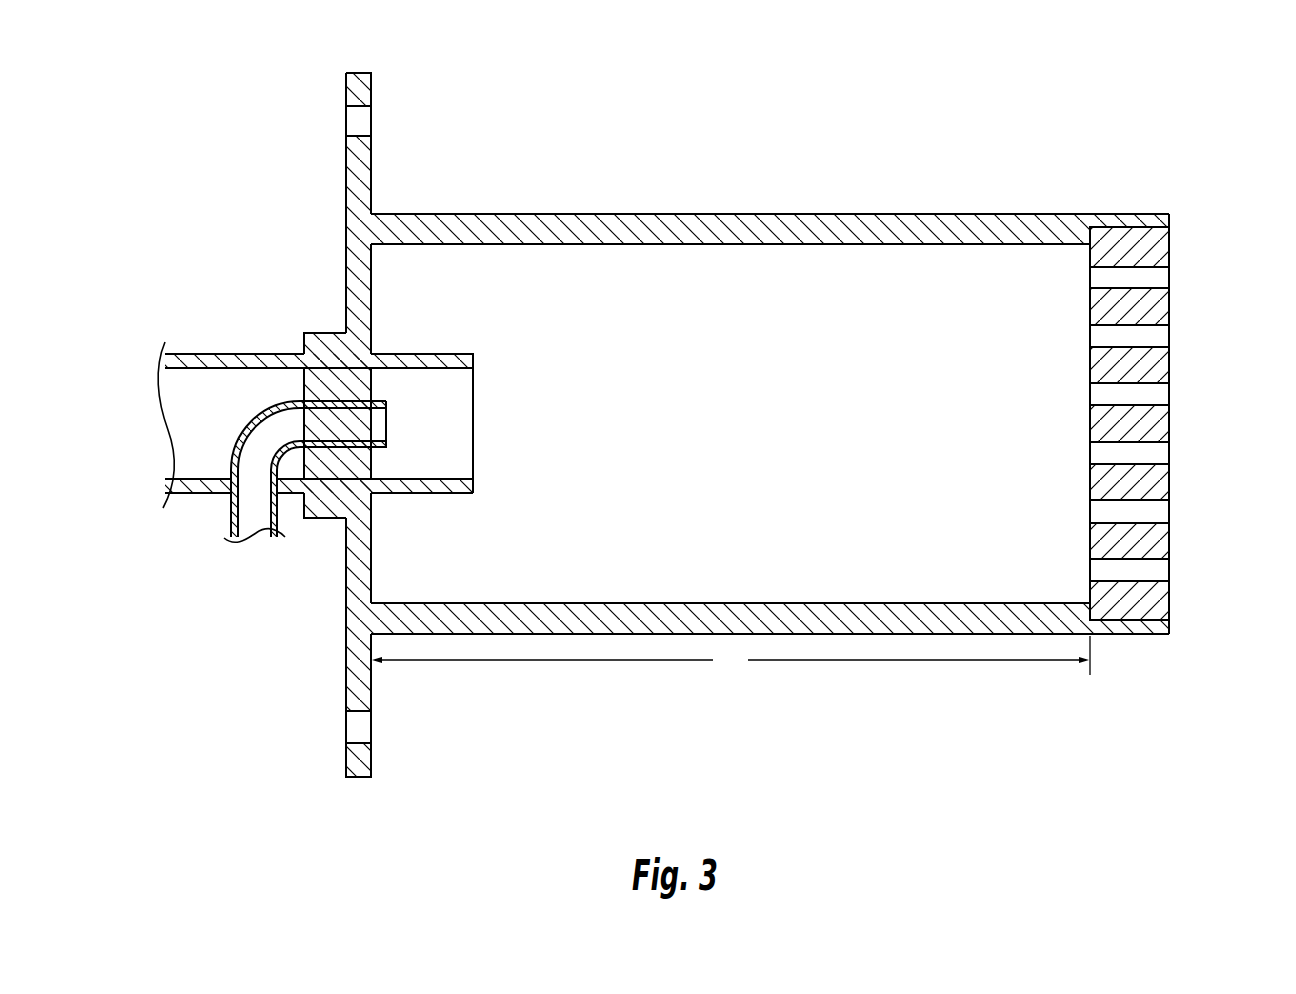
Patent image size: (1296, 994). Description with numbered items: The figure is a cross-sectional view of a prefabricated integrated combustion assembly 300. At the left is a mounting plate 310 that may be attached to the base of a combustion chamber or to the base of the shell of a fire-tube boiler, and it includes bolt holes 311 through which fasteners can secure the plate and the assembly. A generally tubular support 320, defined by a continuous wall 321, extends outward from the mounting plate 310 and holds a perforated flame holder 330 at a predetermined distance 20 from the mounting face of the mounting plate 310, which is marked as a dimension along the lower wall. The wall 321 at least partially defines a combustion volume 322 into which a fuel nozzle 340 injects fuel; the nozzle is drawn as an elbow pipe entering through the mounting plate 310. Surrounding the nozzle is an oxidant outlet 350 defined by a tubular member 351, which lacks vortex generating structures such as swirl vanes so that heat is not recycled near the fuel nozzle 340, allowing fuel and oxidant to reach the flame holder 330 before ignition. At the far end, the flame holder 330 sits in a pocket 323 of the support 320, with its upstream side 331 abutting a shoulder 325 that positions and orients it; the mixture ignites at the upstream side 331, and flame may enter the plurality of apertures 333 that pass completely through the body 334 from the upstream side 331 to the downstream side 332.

The prefabricated integrated combustion assembly 300 is at (1202, 86).
The mounting plate 310 is at (352, 178).
The bolt holes 311 is at (343, 122).
The support 320 is at (608, 210).
The continuous wall 321 is at (816, 230).
The combustion volume 322 is at (835, 433).
The pocket 323 is at (1120, 212).
The shoulder 325 is at (1080, 232).
The perforated flame holder 330 is at (1190, 360).
The upstream side 331 is at (1086, 427).
The downstream side 332 is at (1174, 425).
The apertures 333 is at (1174, 278).
The body 334 is at (1155, 604).
The fuel nozzle 340 is at (336, 400).
The oxidant outlet 350 is at (478, 383).
The tubular member 351 is at (442, 488).
The predetermined distance 20 is at (731, 655).